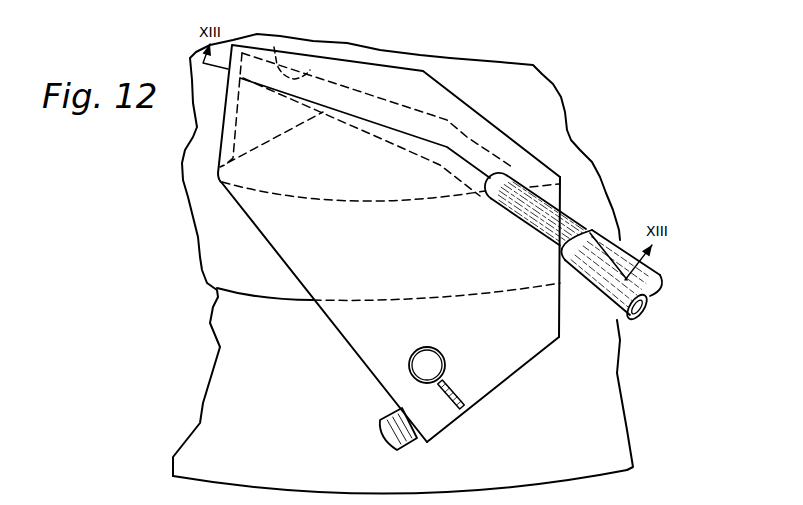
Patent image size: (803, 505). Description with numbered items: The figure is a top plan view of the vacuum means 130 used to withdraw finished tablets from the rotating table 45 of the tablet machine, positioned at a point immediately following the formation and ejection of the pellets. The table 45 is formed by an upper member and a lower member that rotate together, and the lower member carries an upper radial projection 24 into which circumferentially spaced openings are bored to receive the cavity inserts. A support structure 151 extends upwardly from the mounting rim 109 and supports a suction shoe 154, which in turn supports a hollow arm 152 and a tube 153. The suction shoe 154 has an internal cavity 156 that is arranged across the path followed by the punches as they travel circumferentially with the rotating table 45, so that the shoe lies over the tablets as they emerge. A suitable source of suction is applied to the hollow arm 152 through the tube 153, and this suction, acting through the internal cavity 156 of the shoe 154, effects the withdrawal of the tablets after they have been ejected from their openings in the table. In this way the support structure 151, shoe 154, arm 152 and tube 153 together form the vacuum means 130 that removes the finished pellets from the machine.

The upper radial projection 24 is at (213, 260).
The table 45 is at (195, 275).
The mounting rim 109 is at (200, 470).
The vacuum means 130 is at (549, 138).
The support structure 151 is at (424, 368).
The hollow arm 152 is at (565, 223).
The tube 153 is at (617, 255).
The suction shoe 154 is at (510, 357).
The internal cavity 156 is at (274, 47).